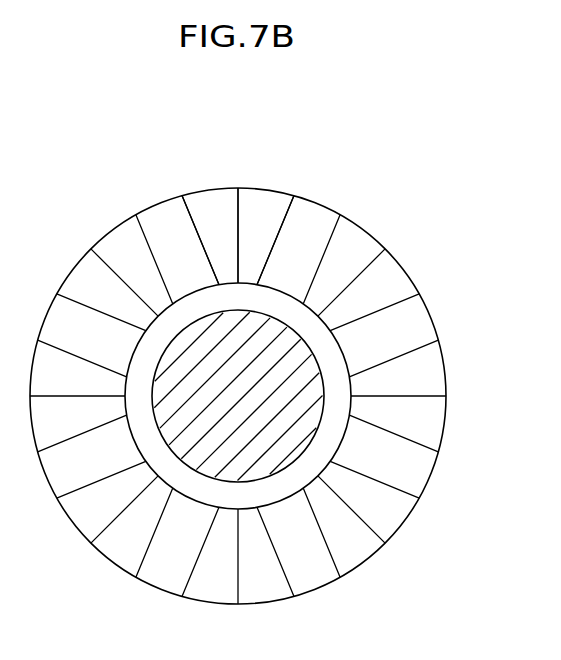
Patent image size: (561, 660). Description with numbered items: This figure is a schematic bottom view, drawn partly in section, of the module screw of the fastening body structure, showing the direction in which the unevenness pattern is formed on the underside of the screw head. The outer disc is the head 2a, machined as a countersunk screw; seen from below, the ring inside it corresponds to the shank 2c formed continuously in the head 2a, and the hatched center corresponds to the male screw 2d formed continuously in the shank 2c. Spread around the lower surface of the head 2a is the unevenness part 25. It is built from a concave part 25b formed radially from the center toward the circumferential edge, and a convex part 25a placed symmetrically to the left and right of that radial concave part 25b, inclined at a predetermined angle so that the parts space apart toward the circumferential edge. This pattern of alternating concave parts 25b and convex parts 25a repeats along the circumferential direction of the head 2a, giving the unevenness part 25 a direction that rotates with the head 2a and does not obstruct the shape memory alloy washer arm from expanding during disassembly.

The head 2a is at (410, 275).
The shank 2c is at (343, 352).
The male screw 2d is at (298, 427).
The unevenness part 25 is at (378, 238).
The convex part 25a is at (190, 217).
The concave part 25b is at (240, 214).